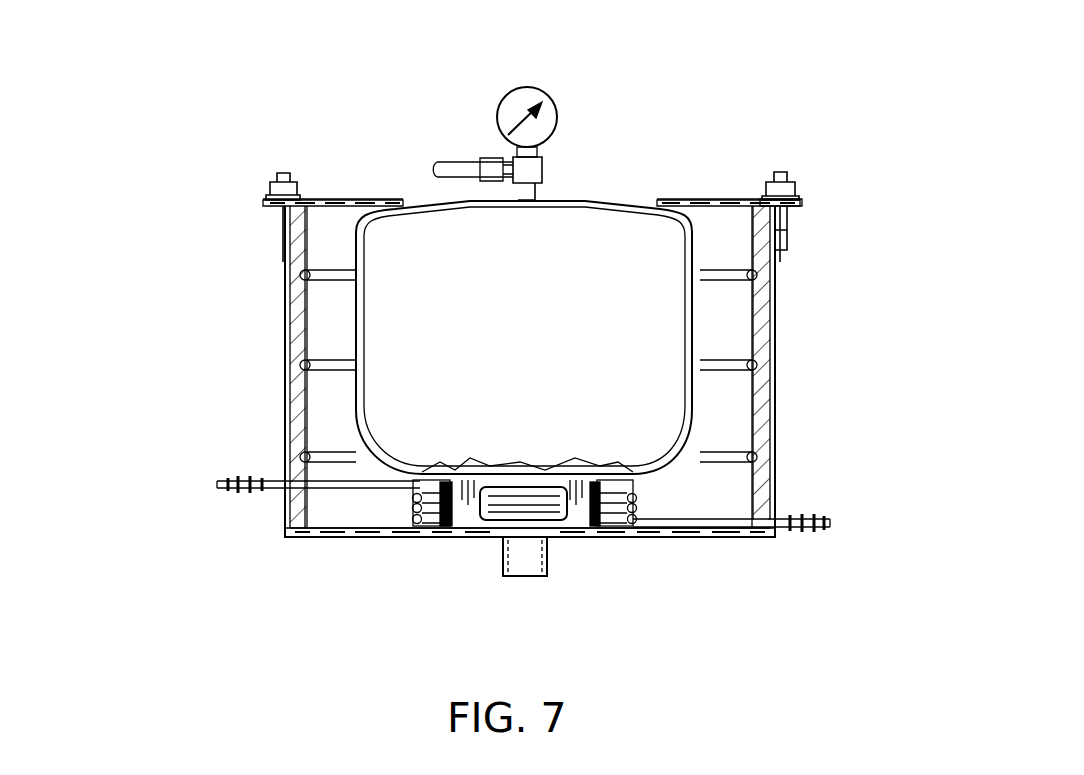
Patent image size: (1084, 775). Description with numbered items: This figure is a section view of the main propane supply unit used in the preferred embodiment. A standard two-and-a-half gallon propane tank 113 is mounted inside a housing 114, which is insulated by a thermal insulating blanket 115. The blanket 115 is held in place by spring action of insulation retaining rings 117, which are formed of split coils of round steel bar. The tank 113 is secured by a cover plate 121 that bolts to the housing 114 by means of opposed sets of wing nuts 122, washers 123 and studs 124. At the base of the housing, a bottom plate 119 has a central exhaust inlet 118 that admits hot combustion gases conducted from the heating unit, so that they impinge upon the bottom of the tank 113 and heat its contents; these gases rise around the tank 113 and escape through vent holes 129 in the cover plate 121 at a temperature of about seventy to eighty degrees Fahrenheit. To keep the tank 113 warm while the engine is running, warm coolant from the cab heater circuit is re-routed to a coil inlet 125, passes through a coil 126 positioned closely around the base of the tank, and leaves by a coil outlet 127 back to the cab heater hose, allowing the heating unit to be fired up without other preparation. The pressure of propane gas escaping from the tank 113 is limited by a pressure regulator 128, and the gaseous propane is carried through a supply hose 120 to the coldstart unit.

The propane tank 113 is at (585, 201).
The housing 114 is at (776, 393).
The thermal insulating blanket 115 is at (776, 325).
The insulation retaining rings 117 is at (325, 272).
The central exhaust inlet 118 is at (553, 556).
The bottom plate 119 is at (432, 536).
The supply hose 120 is at (470, 163).
The cover plate 121 is at (680, 202).
The wing nuts 122 is at (790, 180).
The washers 123 is at (802, 200).
The studs 124 is at (785, 225).
The coil inlet 125 is at (226, 480).
The coil 126 is at (637, 497).
The coil outlet 127 is at (830, 520).
The pressure regulator 128 is at (552, 102).
The vent holes 129 is at (343, 200).